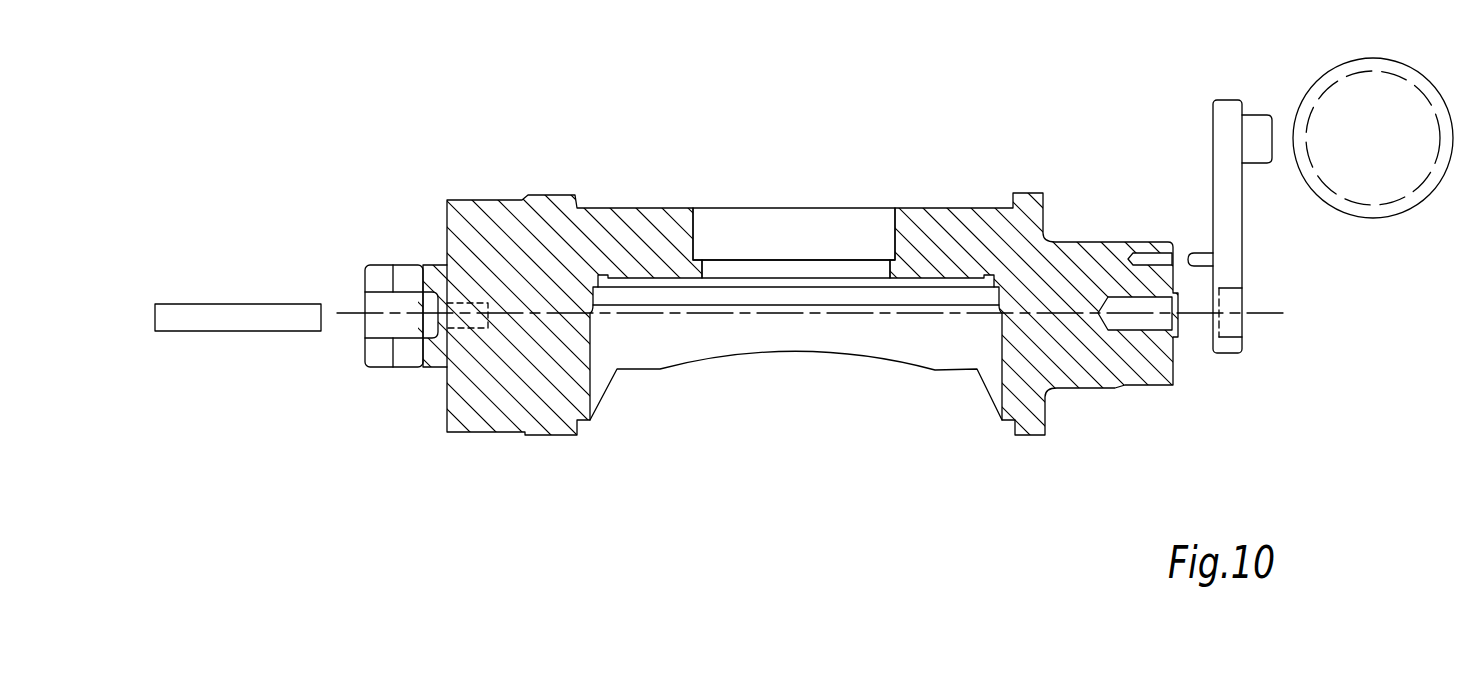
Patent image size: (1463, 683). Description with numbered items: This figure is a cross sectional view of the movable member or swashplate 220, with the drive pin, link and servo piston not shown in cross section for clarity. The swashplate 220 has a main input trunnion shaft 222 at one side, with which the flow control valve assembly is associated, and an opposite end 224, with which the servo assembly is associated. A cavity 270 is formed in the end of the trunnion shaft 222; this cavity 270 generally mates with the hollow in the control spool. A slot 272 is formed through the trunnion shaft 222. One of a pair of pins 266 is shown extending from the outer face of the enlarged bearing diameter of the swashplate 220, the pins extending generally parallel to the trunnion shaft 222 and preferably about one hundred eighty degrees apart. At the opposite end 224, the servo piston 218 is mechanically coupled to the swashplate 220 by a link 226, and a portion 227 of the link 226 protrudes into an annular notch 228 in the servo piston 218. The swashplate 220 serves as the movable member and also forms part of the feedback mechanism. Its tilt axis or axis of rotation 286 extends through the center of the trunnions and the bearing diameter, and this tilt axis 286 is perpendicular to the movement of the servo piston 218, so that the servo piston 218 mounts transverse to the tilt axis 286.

The servo piston 218 is at (1353, 61).
The swashplate 220 is at (660, 208).
The main input trunnion shaft 222 is at (443, 262).
The opposite end 224 is at (1123, 242).
The link 226 is at (1225, 120).
The portion of the link 227 is at (1257, 127).
The annular notch 228 is at (1391, 75).
The pin 266 is at (183, 313).
The cavity 270 is at (388, 340).
The slot 272 is at (405, 280).
The tilt axis 286 is at (723, 313).